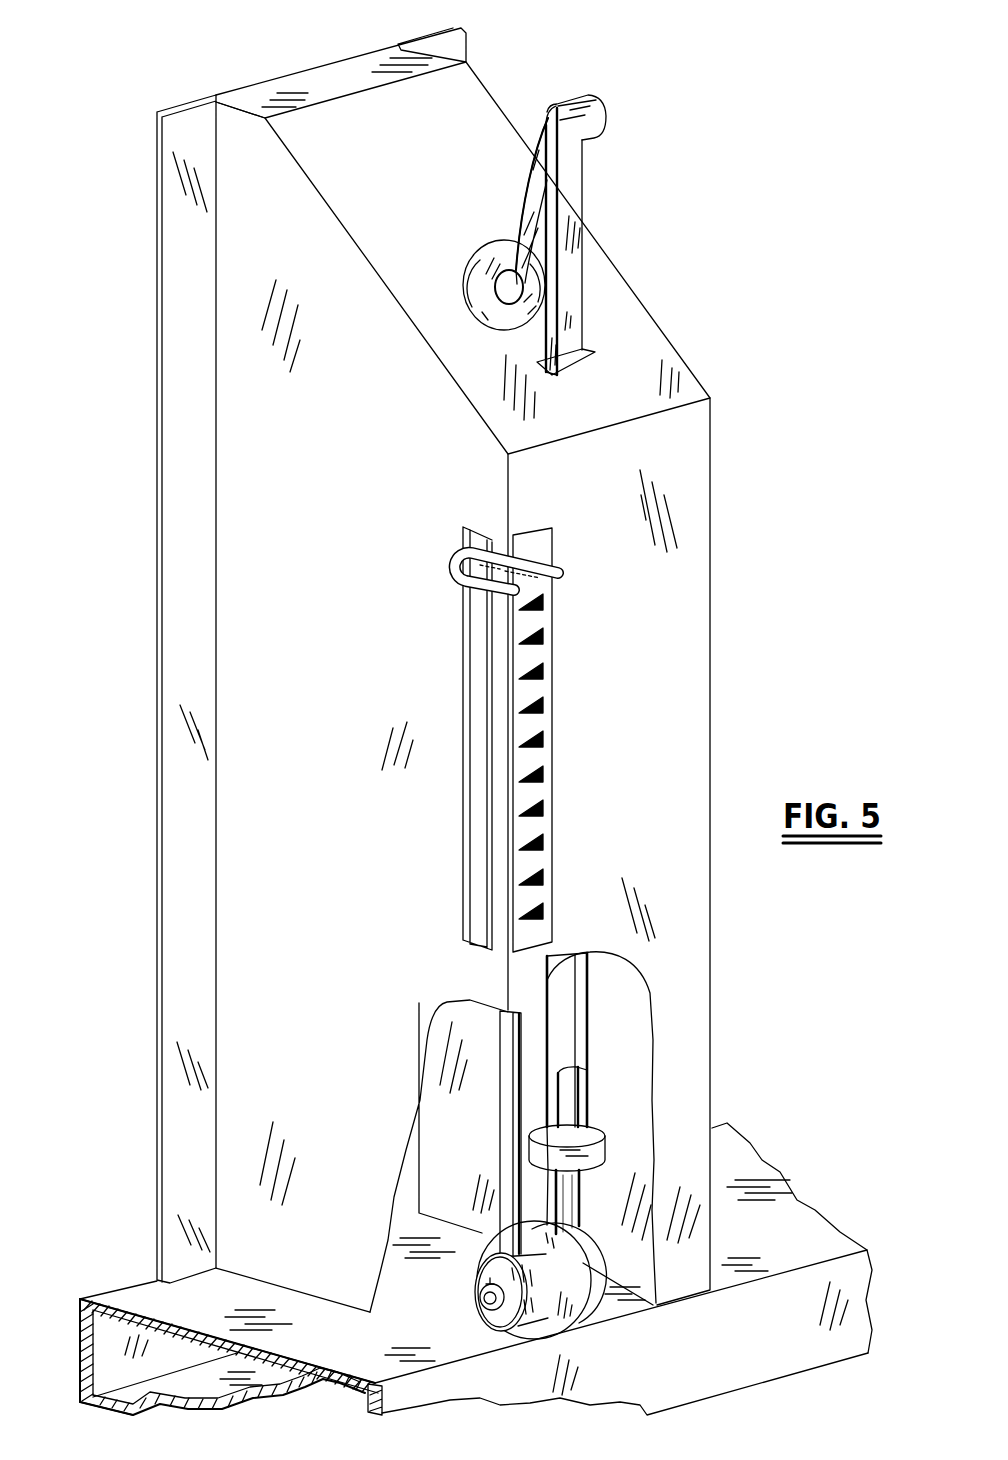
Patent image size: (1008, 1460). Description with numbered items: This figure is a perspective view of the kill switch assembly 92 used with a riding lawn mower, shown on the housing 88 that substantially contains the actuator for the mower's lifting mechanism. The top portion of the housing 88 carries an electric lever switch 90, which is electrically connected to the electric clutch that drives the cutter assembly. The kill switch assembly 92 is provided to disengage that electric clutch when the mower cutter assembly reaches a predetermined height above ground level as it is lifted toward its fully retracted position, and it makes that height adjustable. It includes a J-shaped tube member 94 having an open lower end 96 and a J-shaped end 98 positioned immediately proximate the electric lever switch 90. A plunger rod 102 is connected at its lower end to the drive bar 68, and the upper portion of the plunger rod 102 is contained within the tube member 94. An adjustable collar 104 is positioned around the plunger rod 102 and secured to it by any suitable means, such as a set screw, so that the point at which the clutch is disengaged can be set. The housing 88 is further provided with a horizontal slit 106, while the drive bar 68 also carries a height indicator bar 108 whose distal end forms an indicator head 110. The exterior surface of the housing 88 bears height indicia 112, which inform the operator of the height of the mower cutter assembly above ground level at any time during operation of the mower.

The drive bar 68 is at (793, 1225).
The housing 88 is at (693, 527).
The electric lever switch 90 is at (543, 128).
The kill switch assembly 92 is at (97, 176).
The J-shaped tube member 94 is at (567, 1013).
The open lower end 96 is at (567, 1113).
The J-shaped end 98 is at (606, 119).
The plunger rod 102 is at (570, 1213).
The adjustable collar 104 is at (575, 1150).
The horizontal slit 106 is at (478, 753).
The height indicator bar 108 is at (507, 1020).
The indicator head 110 is at (558, 573).
The height indicia 112 is at (542, 683).